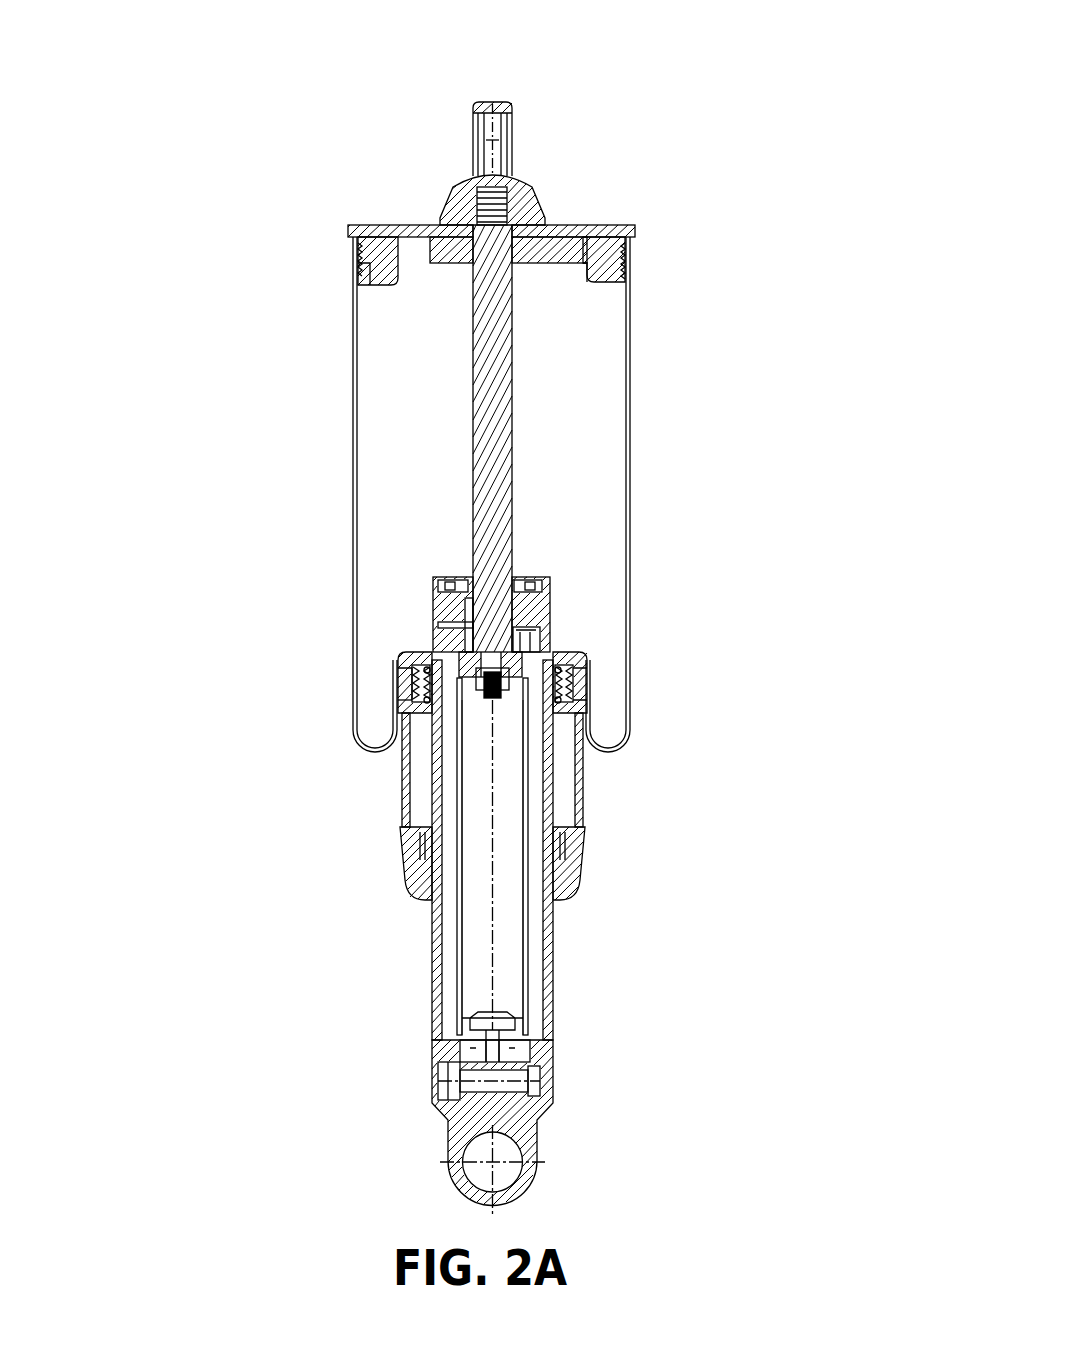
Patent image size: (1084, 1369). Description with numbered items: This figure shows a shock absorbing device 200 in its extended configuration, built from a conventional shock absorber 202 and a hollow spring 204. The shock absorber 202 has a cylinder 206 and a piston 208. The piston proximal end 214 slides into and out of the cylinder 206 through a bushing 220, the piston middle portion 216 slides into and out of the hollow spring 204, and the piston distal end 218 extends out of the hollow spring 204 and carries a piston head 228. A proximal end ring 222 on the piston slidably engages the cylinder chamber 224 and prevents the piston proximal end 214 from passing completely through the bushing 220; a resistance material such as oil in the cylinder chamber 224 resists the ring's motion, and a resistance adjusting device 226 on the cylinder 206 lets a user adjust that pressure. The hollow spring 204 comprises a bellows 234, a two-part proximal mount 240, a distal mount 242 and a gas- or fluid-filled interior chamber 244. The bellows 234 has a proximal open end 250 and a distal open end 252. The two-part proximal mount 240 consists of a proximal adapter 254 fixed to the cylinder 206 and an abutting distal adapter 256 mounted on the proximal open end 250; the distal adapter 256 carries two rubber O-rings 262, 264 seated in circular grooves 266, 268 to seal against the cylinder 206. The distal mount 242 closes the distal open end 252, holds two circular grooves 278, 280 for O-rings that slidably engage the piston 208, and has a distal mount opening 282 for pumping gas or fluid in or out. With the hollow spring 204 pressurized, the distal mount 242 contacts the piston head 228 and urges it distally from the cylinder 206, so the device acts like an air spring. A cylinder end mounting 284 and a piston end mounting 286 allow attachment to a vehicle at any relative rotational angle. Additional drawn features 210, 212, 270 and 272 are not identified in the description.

The shock absorbing device 200 is at (592, 78).
The shock absorber 202 is at (553, 928).
The hollow spring 204 is at (632, 488).
The cylinder 206 is at (553, 1003).
The piston 208 is at (510, 455).
The gland 210 is at (550, 607).
The bolt 212 is at (550, 1080).
The piston proximal end 214 is at (510, 545).
The piston middle portion 216 is at (510, 390).
The piston distal end 218 is at (515, 288).
The bushing 220 is at (433, 618).
The proximal end ring 222 is at (460, 663).
The cylinder chamber 224 is at (477, 820).
The resistance adjusting device 226 is at (438, 1082).
The piston head 228 is at (452, 198).
The bellows 234 is at (352, 468).
The two-part proximal mount 240 is at (580, 775).
The distal mount 242 is at (360, 273).
The interior chamber 244 is at (392, 430).
The proximal open end 250 is at (422, 640).
The distal open end 252 is at (578, 280).
The proximal adapter 254 is at (570, 850).
The distal adapter 256 is at (577, 713).
The rubber O-ring 262 is at (430, 700).
The rubber O-ring 264 is at (407, 670).
The circular groove 266 is at (572, 700).
The circular groove 268 is at (577, 665).
The left flange block 270 is at (400, 252).
The flange plate 272 is at (360, 237).
The circular groove 278 is at (635, 252).
The circular groove 280 is at (635, 238).
The distal mount opening 282 is at (415, 280).
The cylinder end mounting 284 is at (518, 1142).
The piston end mounting 286 is at (478, 104).